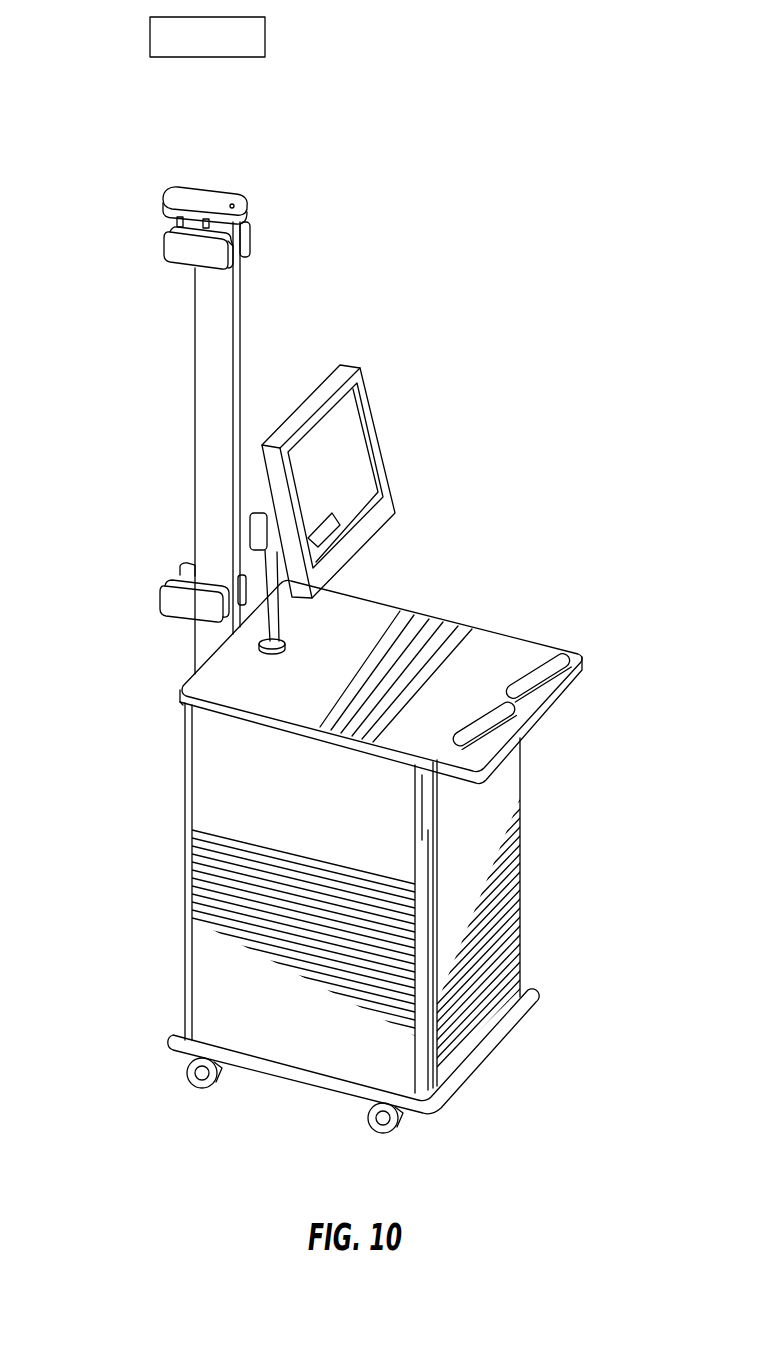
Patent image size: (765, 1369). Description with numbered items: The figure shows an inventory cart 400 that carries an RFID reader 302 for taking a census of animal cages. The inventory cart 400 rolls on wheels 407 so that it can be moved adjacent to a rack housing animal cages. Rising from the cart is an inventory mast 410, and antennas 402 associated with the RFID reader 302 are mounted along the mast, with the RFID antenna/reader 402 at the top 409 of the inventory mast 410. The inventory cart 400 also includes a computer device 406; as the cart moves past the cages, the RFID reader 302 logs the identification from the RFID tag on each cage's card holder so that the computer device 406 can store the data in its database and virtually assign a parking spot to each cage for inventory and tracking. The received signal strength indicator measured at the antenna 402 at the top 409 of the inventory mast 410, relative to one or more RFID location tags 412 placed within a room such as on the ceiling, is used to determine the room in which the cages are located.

The RFID location tag 412 is at (265, 24).
The antenna 402 is at (215, 200).
The top of inventory mast 409 is at (250, 215).
The inventory mast 410 is at (205, 413).
The computer device 406 is at (375, 468).
The RFID reader 302 is at (325, 542).
The inventory cart 400 is at (536, 524).
The wheels 407 is at (374, 1122).